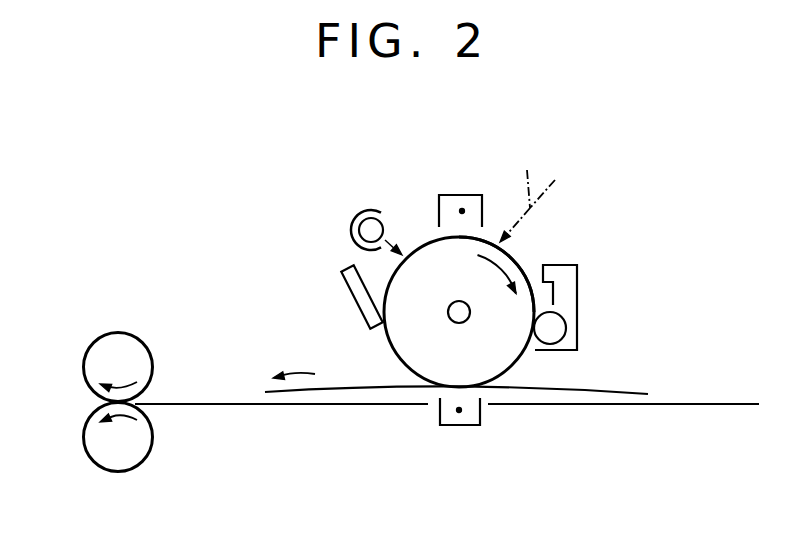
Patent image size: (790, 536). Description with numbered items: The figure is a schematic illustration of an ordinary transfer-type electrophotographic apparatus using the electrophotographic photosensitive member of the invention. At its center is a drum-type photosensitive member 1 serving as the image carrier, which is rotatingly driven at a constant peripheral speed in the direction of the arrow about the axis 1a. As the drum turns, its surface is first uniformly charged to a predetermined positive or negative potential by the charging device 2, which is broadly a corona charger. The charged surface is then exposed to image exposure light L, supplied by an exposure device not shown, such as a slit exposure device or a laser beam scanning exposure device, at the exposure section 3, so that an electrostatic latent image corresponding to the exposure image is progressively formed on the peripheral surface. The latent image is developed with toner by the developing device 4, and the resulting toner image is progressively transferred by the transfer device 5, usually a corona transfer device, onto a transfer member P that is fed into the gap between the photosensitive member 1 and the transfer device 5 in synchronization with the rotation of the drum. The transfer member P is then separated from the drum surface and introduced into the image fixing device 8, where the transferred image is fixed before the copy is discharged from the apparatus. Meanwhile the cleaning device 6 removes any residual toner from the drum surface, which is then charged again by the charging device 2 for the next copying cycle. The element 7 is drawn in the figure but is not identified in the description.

The photosensitive member 1 is at (390, 278).
The axis 1a is at (463, 316).
The charging device 2 is at (460, 195).
The exposure section 3 is at (520, 265).
The developing device 4 is at (578, 298).
The transfer device 5 is at (462, 427).
The cleaning device 6 is at (353, 303).
The discharging lamp 7 is at (355, 212).
The image fixing device 8 is at (127, 328).
The transfer member P is at (628, 392).
The image exposure light L is at (527, 190).